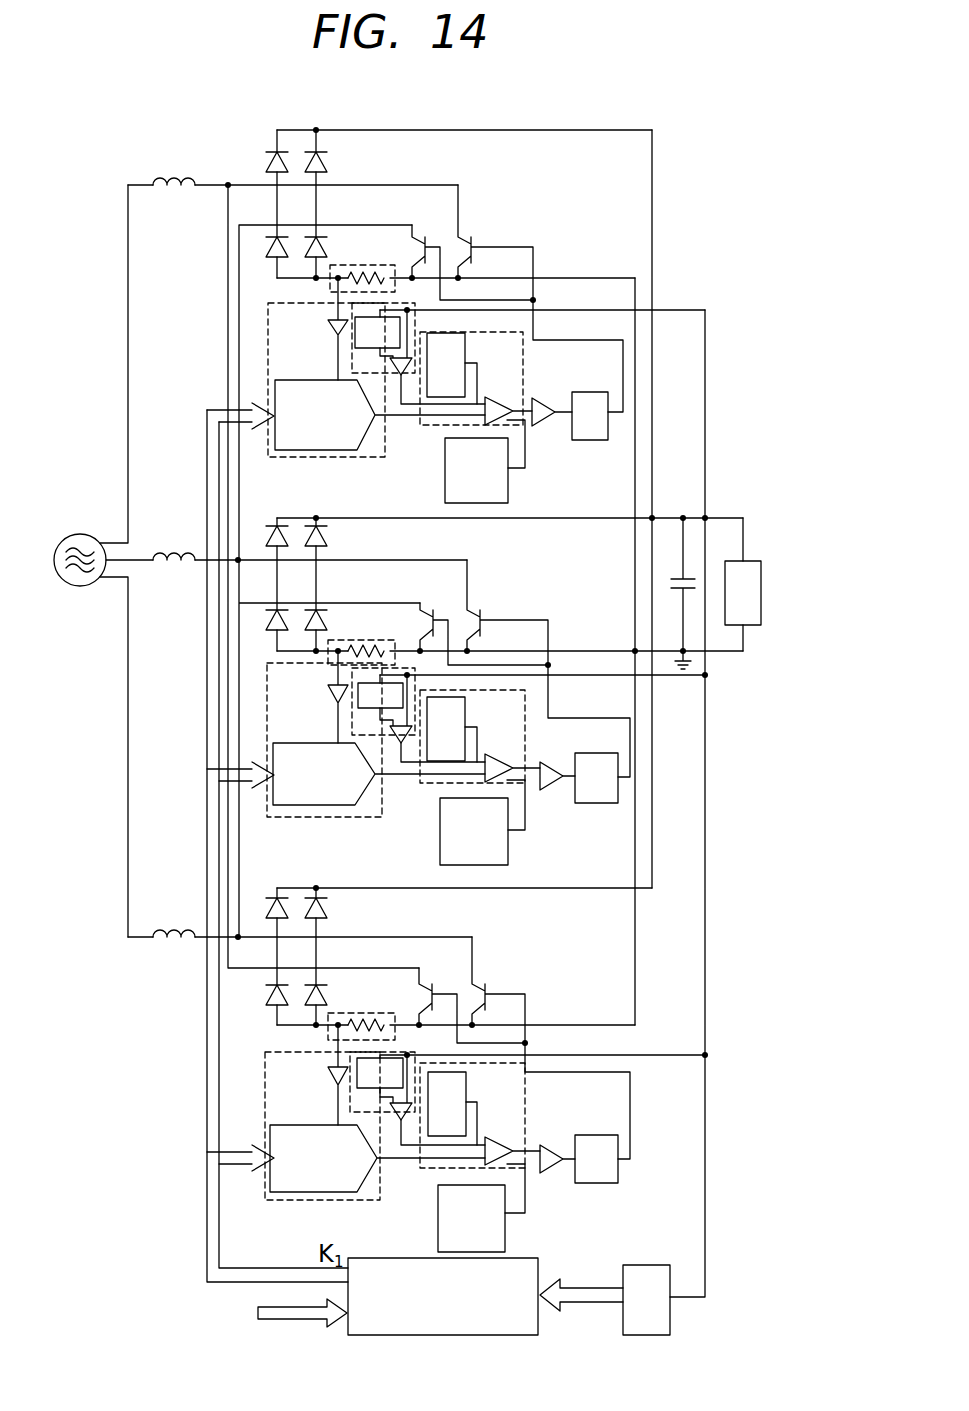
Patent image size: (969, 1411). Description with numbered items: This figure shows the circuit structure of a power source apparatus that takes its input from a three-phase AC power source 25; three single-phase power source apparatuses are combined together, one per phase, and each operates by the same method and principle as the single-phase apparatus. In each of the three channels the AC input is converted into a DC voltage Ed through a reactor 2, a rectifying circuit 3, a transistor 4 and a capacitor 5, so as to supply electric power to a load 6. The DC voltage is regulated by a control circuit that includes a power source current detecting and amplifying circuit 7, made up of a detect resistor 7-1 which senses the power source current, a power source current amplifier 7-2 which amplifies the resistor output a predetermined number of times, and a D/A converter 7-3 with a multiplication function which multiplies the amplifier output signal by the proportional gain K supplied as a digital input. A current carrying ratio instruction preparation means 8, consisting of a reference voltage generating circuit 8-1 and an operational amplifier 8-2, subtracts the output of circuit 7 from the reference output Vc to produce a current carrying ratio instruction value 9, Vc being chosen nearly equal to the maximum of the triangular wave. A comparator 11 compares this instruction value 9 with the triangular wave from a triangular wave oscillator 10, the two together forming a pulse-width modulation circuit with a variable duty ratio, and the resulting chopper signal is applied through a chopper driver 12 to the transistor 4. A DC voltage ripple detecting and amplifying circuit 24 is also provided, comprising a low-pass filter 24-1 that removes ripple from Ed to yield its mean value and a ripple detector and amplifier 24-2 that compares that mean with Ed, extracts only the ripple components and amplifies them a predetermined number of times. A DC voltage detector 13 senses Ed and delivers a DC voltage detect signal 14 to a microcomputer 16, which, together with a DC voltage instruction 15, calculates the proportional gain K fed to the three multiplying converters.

The reactor 2 is at (170, 178).
The rectifying circuit 3 is at (300, 160).
The transistor 4 is at (460, 232).
The capacitor 5 is at (672, 577).
The load 6 is at (761, 580).
The power source current detecting and amplifying circuit 7 is at (268, 345).
The detect resistor 7-1 is at (368, 275).
The power source current amplifier 7-2 is at (331, 327).
The D/A converter with a multiplication function 7-3 is at (312, 452).
The current carrying ratio instruction preparation means 8 is at (485, 347).
The reference voltage generating circuit 8-1 is at (462, 335).
The operational amplifier 8-2 is at (505, 412).
The current carrying ratio instruction value 9 is at (518, 397).
The triangular wave oscillator 10 is at (445, 480).
The comparator 11 is at (545, 425).
The chopper driver 12 is at (588, 392).
The DC voltage detector 13 is at (641, 1265).
The DC voltage detect signal 14 is at (595, 1288).
The DC voltage instruction 15 is at (258, 1313).
The microcomputer 16 is at (477, 1336).
The DC voltage ripple detecting and amplifying circuit 24 is at (408, 308).
The low-pass filter 24-1 is at (388, 357).
The ripple detector and amplifier 24-2 is at (402, 378).
The three-phase AC power source 25 is at (80, 534).